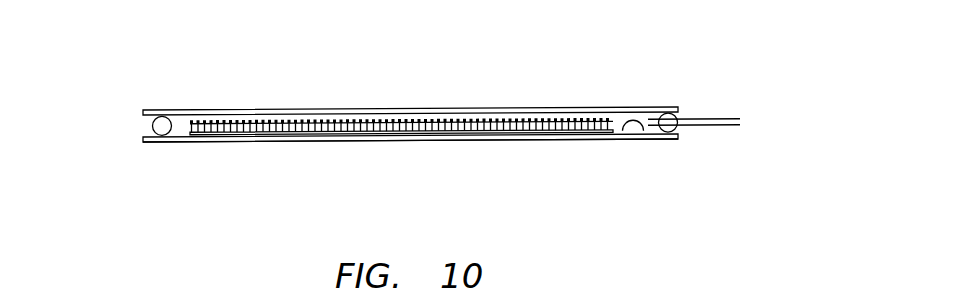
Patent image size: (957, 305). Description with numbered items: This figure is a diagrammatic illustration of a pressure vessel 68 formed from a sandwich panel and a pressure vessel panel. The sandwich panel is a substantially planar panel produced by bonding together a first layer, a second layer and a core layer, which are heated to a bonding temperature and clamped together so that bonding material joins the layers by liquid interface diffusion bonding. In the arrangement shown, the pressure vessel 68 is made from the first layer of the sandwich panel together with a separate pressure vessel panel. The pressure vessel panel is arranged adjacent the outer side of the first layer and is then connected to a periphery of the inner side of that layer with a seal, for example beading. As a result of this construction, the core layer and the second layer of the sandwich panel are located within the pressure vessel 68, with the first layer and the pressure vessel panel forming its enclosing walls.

The pressure vessel 68 is at (146, 124).